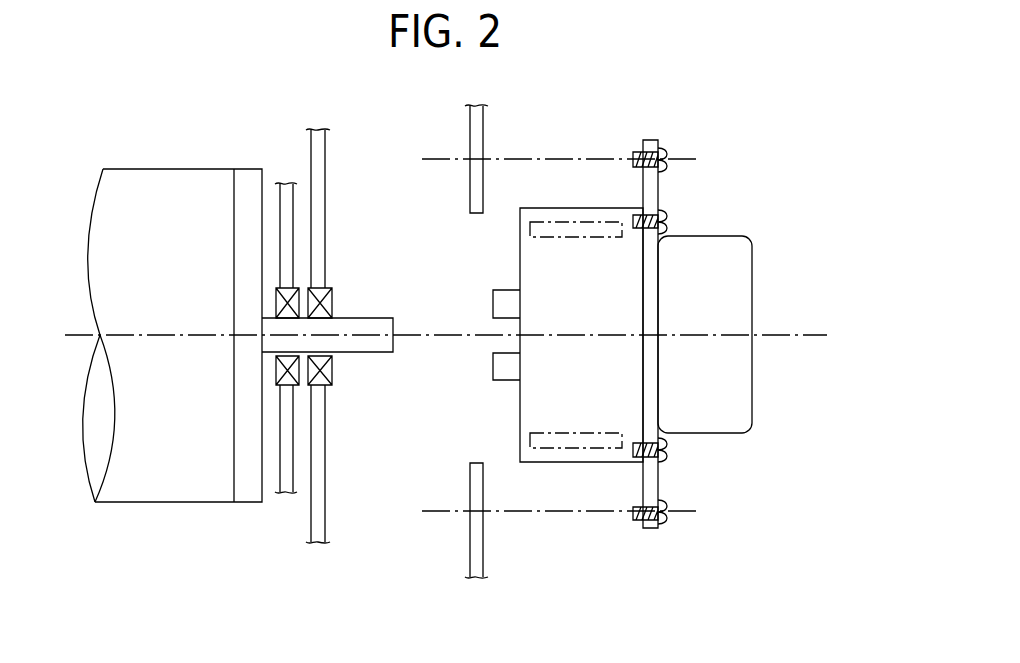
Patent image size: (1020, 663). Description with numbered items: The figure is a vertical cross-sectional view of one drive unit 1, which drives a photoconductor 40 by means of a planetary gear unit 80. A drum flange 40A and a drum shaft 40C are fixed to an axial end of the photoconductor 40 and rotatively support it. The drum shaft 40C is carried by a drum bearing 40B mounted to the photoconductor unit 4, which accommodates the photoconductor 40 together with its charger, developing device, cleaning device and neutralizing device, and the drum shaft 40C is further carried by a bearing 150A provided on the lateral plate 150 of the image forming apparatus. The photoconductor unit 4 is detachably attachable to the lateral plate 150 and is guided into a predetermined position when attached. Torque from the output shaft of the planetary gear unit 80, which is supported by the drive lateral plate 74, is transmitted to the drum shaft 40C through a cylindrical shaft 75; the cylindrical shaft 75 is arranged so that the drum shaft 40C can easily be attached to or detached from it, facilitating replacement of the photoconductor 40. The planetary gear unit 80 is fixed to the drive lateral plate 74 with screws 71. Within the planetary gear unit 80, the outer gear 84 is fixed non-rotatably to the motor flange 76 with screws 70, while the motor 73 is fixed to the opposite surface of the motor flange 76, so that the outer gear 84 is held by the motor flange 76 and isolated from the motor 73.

The drive unit 1 is at (598, 110).
The photoconductor unit 4 is at (288, 173).
The photoconductor 40 is at (165, 499).
The drum flange 40A is at (250, 172).
The drum bearing 40B is at (276, 371).
The drum shaft 40C is at (362, 322).
The screws 70 is at (668, 214).
The screws 71 is at (668, 151).
The motor 73 is at (750, 380).
The drive lateral plate 74 is at (480, 134).
The cylindrical shaft 75 is at (500, 291).
The motor flange 76 is at (652, 482).
The planetary gear unit 80 is at (570, 463).
The outer gear 84 is at (577, 216).
The lateral plate 150 is at (318, 470).
The bearing 150A is at (332, 365).